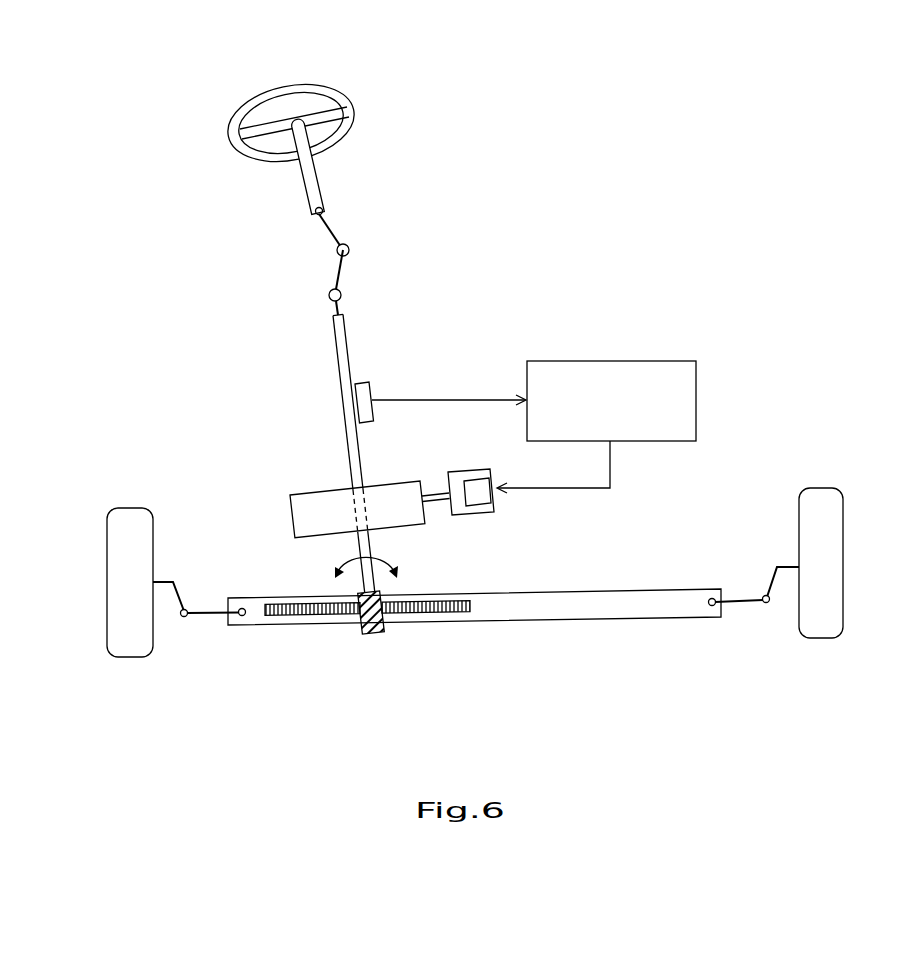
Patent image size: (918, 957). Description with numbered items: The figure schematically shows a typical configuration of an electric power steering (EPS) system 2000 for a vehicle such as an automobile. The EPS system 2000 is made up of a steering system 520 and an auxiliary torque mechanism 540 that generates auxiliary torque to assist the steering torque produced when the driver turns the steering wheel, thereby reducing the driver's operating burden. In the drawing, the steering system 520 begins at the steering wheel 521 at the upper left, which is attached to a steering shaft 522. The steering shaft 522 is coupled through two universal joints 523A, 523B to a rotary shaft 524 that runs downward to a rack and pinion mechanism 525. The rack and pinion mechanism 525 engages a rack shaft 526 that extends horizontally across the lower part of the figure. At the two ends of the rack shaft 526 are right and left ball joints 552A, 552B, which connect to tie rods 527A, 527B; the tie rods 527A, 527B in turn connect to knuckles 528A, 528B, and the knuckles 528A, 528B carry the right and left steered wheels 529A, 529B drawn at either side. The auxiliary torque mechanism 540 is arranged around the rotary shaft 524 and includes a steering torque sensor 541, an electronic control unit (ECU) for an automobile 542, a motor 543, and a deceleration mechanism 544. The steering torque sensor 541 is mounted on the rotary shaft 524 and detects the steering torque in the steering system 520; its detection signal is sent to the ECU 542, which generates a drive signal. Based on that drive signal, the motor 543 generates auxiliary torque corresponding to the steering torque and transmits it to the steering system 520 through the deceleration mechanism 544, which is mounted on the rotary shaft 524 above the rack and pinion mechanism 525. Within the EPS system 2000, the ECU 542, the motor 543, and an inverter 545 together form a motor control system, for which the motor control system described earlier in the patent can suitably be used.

The EPS system 2000 is at (565, 36).
The steering system 520 is at (448, 401).
The steering wheel 521 is at (251, 104).
The steering shaft 522 is at (320, 176).
The universal joint 523A is at (350, 247).
The universal joint 523B is at (342, 293).
The rotary shaft 524 is at (348, 343).
The rack and pinion mechanism 525 is at (384, 646).
The rack shaft 526 is at (512, 607).
The tie rod 527A is at (195, 610).
The tie rod 527B is at (752, 598).
The knuckle 528A is at (168, 580).
The knuckle 528B is at (778, 565).
The steered wheel 529A is at (118, 660).
The steered wheel 529B is at (808, 640).
The auxiliary torque mechanism 540 is at (544, 405).
The steering torque sensor 541 is at (372, 385).
The electronic control unit 542 is at (660, 362).
The motor 543 is at (470, 471).
The deceleration mechanism 544 is at (298, 492).
The inverter 545 is at (480, 500).
The ball joint 552A is at (240, 622).
The ball joint 552B is at (708, 608).